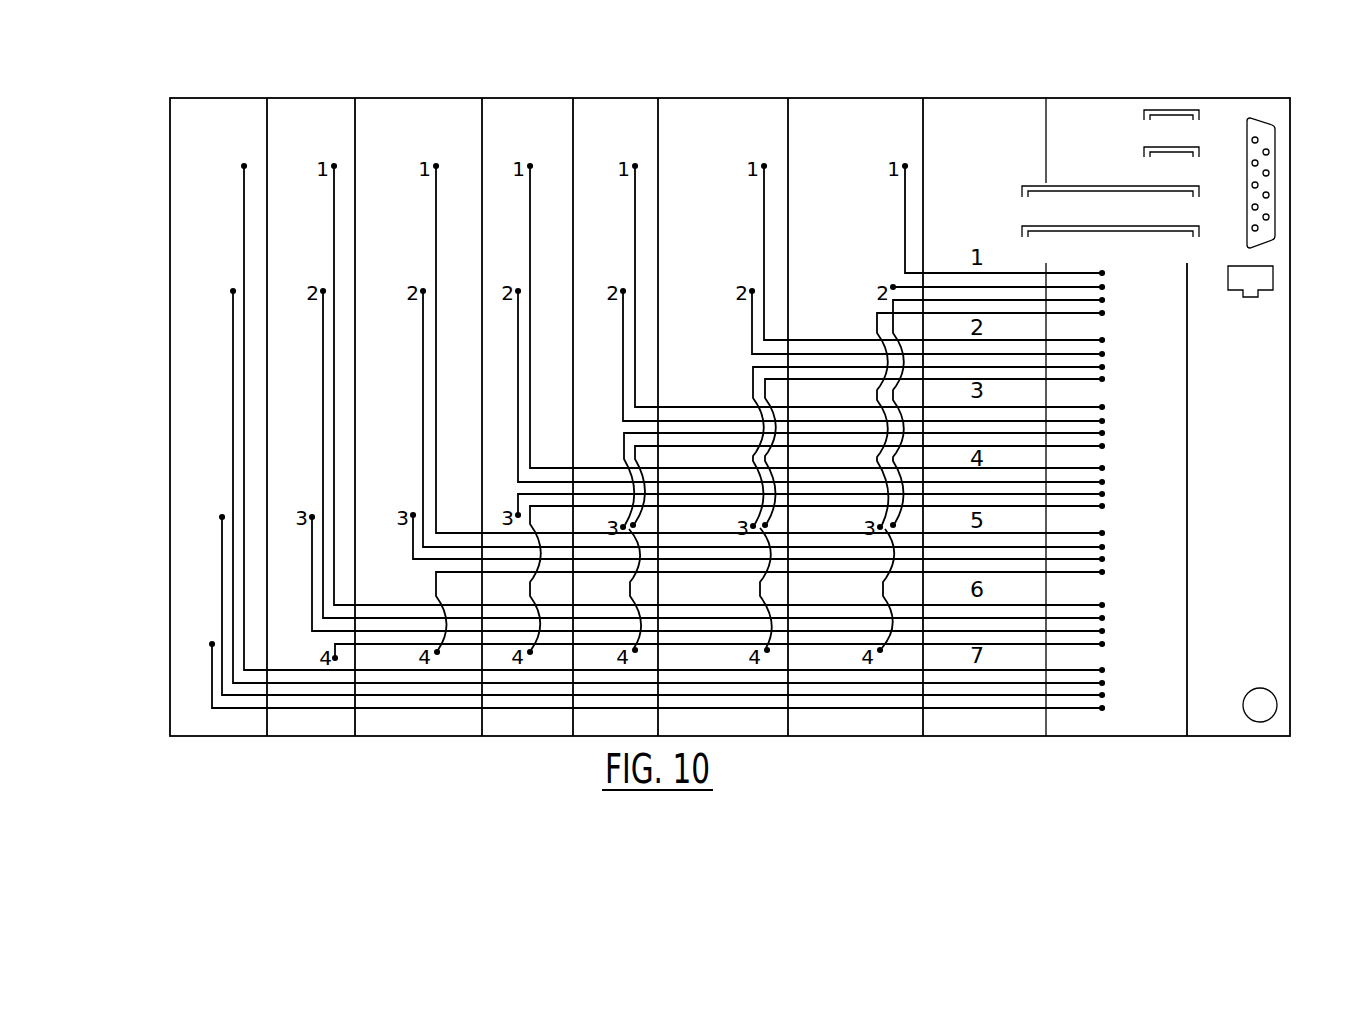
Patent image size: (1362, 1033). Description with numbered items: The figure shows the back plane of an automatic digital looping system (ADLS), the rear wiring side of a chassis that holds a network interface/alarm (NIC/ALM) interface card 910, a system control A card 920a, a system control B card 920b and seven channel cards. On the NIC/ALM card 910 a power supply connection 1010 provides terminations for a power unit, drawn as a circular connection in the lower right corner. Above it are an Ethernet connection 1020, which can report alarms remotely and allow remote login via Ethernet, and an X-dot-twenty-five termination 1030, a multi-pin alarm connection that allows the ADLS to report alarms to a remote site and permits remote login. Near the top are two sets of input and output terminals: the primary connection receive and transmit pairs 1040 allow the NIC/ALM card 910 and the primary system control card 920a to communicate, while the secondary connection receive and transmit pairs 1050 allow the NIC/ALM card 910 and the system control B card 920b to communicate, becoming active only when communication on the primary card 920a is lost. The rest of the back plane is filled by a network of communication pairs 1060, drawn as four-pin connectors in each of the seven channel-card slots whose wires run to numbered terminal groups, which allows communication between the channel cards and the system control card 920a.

The network interface/alarm (NIC/ALM) interface card 910 is at (1210, 736).
The system control A card (SYSCTLA) 920a is at (1098, 737).
The system control B card (SYSCTLB) 920b is at (988, 737).
The power supply connection 1010 is at (1278, 703).
The Ethernet connection 1020 is at (1273, 277).
The X.25 termination 1030 is at (1258, 123).
The primary connection receive and transmit pairs 1040 is at (1166, 139).
The secondary connection receive and transmit pairs 1050 is at (1068, 218).
The network of communication pairs 1060 is at (212, 679).